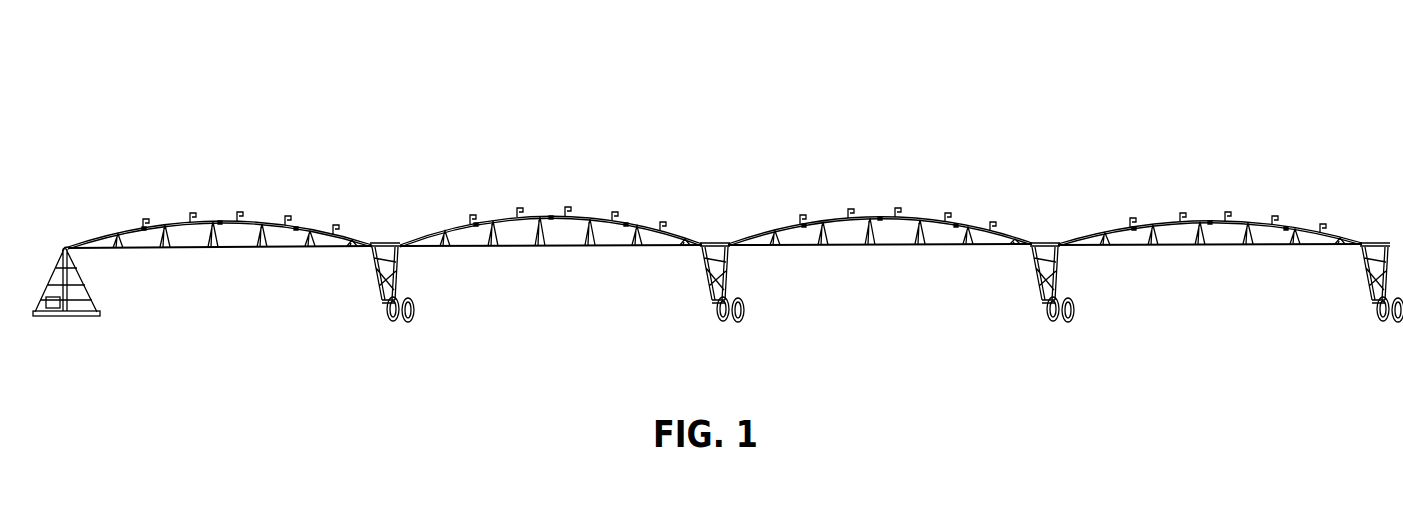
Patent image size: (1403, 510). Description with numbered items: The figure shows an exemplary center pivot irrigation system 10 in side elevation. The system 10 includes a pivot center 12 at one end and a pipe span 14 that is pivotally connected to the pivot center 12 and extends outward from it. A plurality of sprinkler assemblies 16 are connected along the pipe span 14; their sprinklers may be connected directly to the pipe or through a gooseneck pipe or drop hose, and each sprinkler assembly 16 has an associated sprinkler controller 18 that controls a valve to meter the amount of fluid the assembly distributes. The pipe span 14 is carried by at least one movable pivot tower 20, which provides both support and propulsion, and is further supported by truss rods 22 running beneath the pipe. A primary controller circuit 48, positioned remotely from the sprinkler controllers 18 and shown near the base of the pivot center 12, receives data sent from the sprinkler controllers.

The center pivot irrigation system 10 is at (718, 204).
The pivot center 12 is at (69, 287).
The pipe span 14 is at (840, 228).
The sprinkler assemblies 16 is at (607, 222).
The sprinkler controller 18 is at (475, 220).
The movable pivot tower 20 is at (402, 282).
The truss rods 22 is at (230, 252).
The primary controller circuit 48 is at (53, 311).